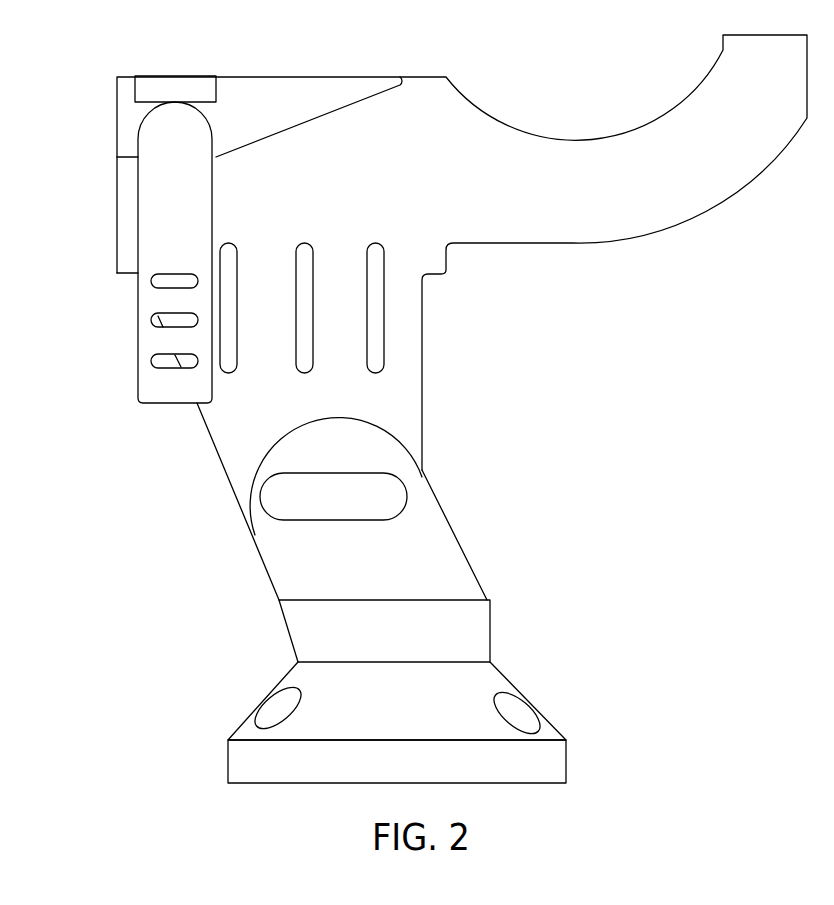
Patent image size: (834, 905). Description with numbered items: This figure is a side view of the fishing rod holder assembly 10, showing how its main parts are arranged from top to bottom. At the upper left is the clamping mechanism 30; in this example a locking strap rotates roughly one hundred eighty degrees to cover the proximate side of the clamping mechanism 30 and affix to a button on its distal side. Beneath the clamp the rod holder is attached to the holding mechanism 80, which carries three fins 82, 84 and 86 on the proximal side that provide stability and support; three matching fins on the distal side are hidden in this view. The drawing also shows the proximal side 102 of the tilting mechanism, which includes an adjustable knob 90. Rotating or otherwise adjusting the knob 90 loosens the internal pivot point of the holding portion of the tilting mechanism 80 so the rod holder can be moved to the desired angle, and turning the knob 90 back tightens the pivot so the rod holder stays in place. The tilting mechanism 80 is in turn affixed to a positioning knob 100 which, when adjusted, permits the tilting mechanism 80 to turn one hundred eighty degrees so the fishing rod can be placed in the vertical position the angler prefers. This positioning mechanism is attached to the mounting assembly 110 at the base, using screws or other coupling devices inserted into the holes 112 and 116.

The firearm / device 10 is at (120, 123).
The clamping mechanism 30 is at (194, 88).
The holding mechanism 80 is at (422, 316).
The fin 82 is at (230, 374).
The fin 84 is at (303, 374).
The fin 86 is at (375, 372).
The adjustable knob 90 is at (275, 508).
The positioning knob 100 is at (490, 630).
The proximal side of the tilting mechanism 102 is at (451, 528).
The mounting assembly 110 is at (513, 683).
The hole 112 is at (257, 715).
The hole 116 is at (522, 707).